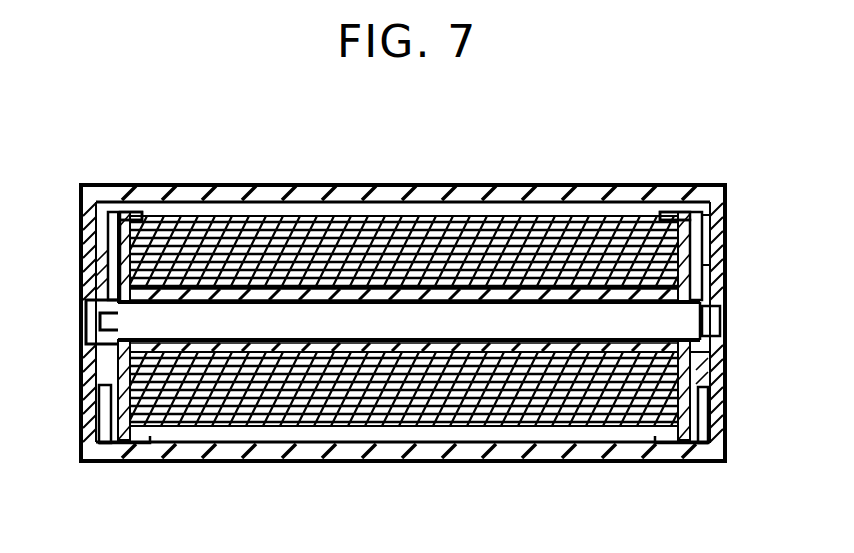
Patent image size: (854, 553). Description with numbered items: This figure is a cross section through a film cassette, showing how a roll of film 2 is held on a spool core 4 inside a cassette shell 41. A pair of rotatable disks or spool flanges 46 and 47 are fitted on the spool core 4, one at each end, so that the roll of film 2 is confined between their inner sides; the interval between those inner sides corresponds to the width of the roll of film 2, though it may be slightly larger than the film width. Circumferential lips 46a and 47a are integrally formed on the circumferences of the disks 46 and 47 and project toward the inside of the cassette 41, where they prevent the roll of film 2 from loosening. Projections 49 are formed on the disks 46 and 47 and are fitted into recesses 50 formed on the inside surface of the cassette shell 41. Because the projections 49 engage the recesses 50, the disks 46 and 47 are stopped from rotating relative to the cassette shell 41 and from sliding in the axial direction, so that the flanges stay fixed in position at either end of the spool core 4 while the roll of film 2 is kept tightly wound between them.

The roll of film 2 is at (322, 214).
The spool core 4 is at (715, 323).
The cassette shell 41 is at (492, 184).
The rotatable disk 46 is at (82, 223).
The circumferential lip 46a is at (137, 212).
The rotatable disk 47 is at (712, 232).
The circumferential lip 47a is at (683, 210).
The projection 49 is at (121, 462).
The recess 50 is at (707, 434).